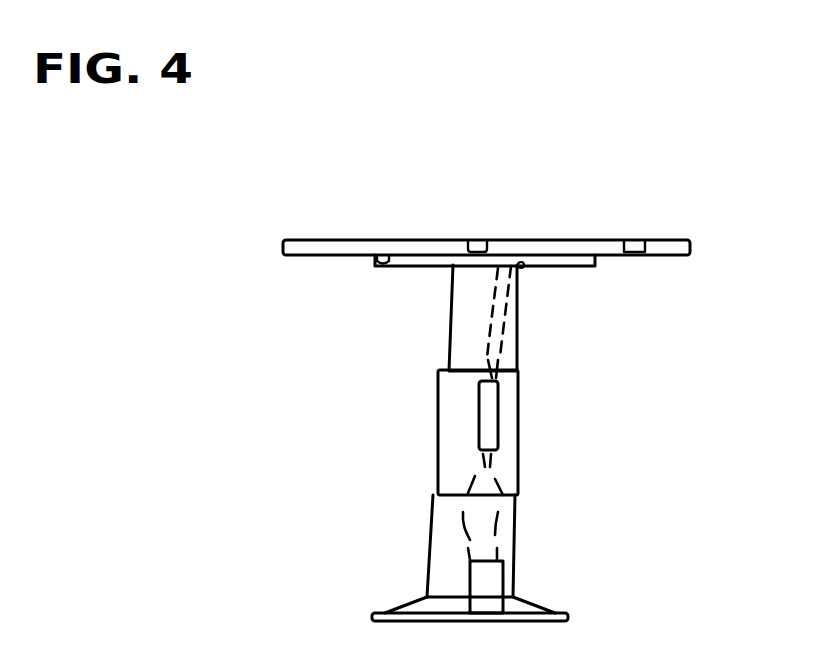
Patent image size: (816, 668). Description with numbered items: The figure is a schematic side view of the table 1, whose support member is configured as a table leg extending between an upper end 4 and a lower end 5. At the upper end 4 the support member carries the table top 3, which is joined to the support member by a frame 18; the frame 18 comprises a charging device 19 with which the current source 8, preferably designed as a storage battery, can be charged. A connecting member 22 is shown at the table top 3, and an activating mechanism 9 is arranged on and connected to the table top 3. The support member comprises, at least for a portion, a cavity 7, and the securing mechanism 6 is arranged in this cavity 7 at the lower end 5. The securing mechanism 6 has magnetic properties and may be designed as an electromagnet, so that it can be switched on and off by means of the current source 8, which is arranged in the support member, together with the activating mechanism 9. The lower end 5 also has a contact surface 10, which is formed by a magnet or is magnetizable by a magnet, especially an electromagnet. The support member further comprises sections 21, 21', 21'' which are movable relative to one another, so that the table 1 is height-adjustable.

The table 1 is at (393, 200).
The table top 3 is at (551, 240).
The upper end 4 is at (447, 272).
The lower end 5 is at (420, 586).
The securing mechanism 6 is at (485, 590).
The cavity 7 is at (468, 445).
The current source 8 is at (490, 416).
The activating mechanism 9 is at (645, 253).
The contact surface 10 is at (512, 623).
The frame 18 is at (382, 265).
The charging device 19 is at (527, 268).
The section of the support member 21 is at (551, 533).
The section of the support member 21' is at (560, 427).
The section of the support member 21'' is at (575, 323).
The connecting member 22 is at (475, 240).